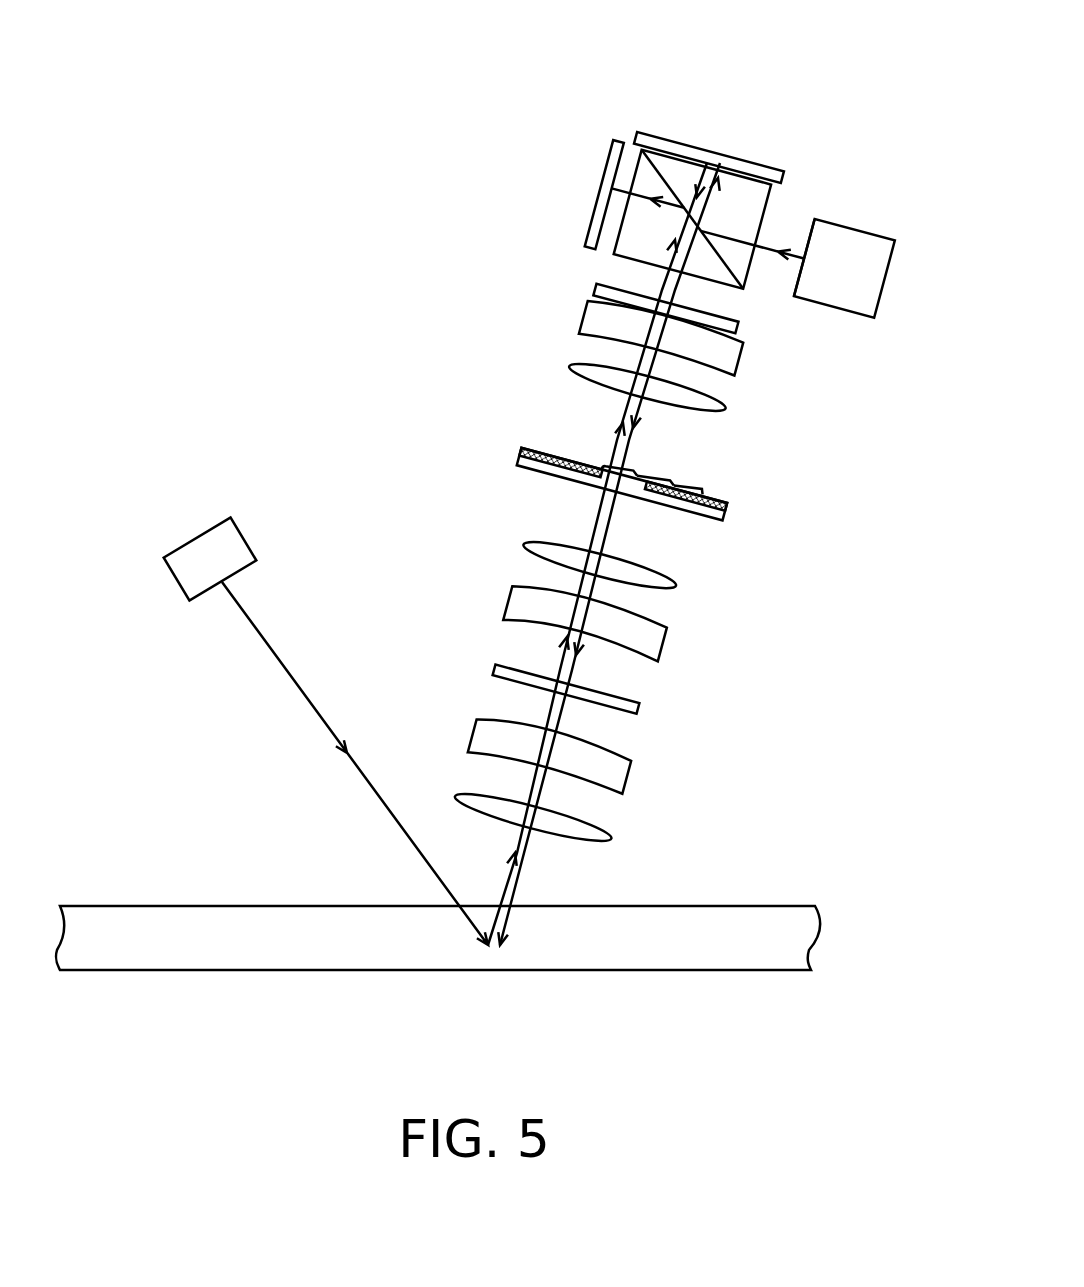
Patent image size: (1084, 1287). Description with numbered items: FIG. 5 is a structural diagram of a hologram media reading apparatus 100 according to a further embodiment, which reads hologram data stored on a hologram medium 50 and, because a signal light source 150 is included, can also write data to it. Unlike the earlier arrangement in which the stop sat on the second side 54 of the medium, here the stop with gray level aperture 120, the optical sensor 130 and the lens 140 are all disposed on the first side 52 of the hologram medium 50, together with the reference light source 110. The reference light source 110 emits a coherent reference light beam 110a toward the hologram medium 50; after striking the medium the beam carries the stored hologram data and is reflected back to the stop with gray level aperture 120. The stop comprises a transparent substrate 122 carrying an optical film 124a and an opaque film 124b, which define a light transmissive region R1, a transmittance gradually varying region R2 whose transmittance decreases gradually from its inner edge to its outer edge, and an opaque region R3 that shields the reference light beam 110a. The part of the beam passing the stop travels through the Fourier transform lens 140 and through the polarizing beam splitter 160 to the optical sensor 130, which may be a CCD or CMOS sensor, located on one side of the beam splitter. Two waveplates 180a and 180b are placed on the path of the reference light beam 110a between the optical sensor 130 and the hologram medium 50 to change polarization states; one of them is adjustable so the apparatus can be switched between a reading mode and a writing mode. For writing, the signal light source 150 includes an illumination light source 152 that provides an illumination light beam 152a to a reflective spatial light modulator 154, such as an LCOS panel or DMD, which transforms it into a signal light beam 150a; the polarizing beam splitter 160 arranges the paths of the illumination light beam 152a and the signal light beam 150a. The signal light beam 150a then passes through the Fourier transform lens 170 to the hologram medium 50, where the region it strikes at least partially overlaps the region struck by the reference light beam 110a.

The hologram medium 50 is at (796, 941).
The first side 52 is at (779, 863).
The second side 54 is at (780, 1024).
The hologram media reading apparatus 100 is at (881, 1089).
The reference light source 110 is at (202, 548).
The reference light beam 110a is at (260, 630).
The stop with gray level aperture 120 is at (664, 488).
The substrate 122 is at (518, 461).
The optical film 124a is at (660, 493).
The opaque film 124b is at (548, 452).
The light transmissive region R1 is at (637, 463).
The transmittance gradually varying region R2 is at (675, 474).
The opaque region R3 is at (707, 483).
The optical sensor 130 is at (605, 186).
The lens 140 is at (727, 408).
The signal light source 150 is at (764, 198).
The signal light beam 150a is at (703, 176).
The illumination light source 152 is at (856, 242).
The illumination light beam 152a is at (795, 260).
The spatial light modulator 154 is at (758, 163).
The polarizing beam splitter 160 is at (667, 160).
The lens 170 is at (603, 833).
The waveplate 180a is at (640, 708).
The waveplate 180b is at (600, 295).